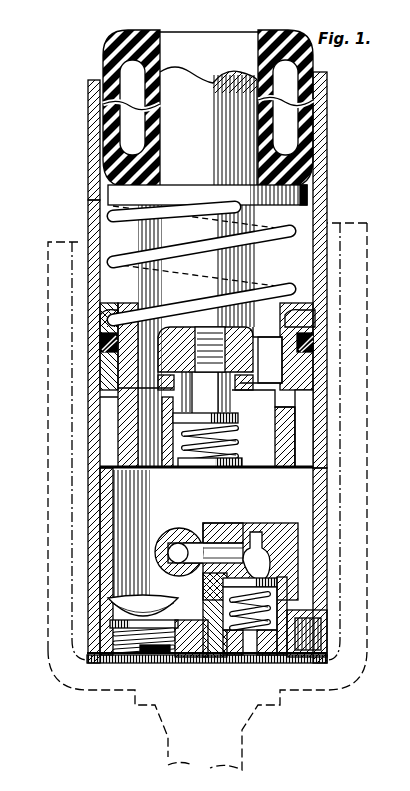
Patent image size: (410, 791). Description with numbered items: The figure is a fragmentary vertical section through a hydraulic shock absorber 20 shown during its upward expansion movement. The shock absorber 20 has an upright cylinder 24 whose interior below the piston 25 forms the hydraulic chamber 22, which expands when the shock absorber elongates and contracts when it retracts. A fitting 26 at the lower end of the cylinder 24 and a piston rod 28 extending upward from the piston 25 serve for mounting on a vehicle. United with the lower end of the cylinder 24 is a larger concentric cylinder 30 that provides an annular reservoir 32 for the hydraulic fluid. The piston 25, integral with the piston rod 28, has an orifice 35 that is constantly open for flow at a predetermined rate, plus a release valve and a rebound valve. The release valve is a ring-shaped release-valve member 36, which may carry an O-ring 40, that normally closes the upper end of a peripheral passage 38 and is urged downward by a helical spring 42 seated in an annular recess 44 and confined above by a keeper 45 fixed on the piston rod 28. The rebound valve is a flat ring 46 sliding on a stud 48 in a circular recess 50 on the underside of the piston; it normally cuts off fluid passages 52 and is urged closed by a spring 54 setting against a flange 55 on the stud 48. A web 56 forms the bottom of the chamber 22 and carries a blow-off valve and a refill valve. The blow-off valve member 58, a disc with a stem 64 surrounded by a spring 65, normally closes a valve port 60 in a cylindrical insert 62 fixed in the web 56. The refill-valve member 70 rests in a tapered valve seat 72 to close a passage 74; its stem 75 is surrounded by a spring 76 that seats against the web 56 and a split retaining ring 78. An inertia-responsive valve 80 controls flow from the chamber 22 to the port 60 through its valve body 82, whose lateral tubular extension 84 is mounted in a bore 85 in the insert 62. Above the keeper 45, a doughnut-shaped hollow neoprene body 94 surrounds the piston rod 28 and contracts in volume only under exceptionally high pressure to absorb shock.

The hydraulic shock absorber 20 is at (80, 181).
The hydraulic chamber 22 is at (308, 498).
The upright cylinder 24 is at (93, 212).
The piston 25 is at (300, 455).
The fitting 26 is at (167, 755).
The piston rod 28 is at (192, 80).
The concentric cylinder 30 is at (45, 370).
The annular reservoir 32 is at (78, 414).
The orifice 35 is at (267, 403).
The release-valve member 36 is at (100, 322).
The peripheral passage 38 is at (308, 430).
The O-ring 40 is at (313, 342).
The helical spring 42 is at (281, 244).
The annular recess 44 is at (300, 303).
The keeper 45 is at (310, 194).
The rebound-valve member 46 is at (184, 435).
The stud 48 is at (210, 395).
The circular recess 50 is at (272, 468).
The fluid passages 52 is at (259, 364).
The spring 54 is at (177, 465).
The flange 55 is at (187, 466).
The web 56 is at (195, 658).
The blow-off valve member 58 is at (280, 584).
The valve port 60 is at (263, 535).
The cylindrical insert 62 is at (290, 535).
The stem 64 is at (282, 600).
The spring 65 is at (257, 632).
The refill-valve member 70 is at (128, 600).
The tapered valve seat 72 is at (110, 630).
The passage 74 is at (110, 645).
The stem 75 is at (150, 657).
The spring 76 is at (110, 660).
The split retaining ring 78 is at (137, 657).
The inertia-responsive valve 80 is at (160, 540).
The valve body 82 is at (166, 560).
The lateral tubular extension 84 is at (197, 540).
The bore 85 is at (220, 540).
The hollow neoprene body 94 is at (316, 137).